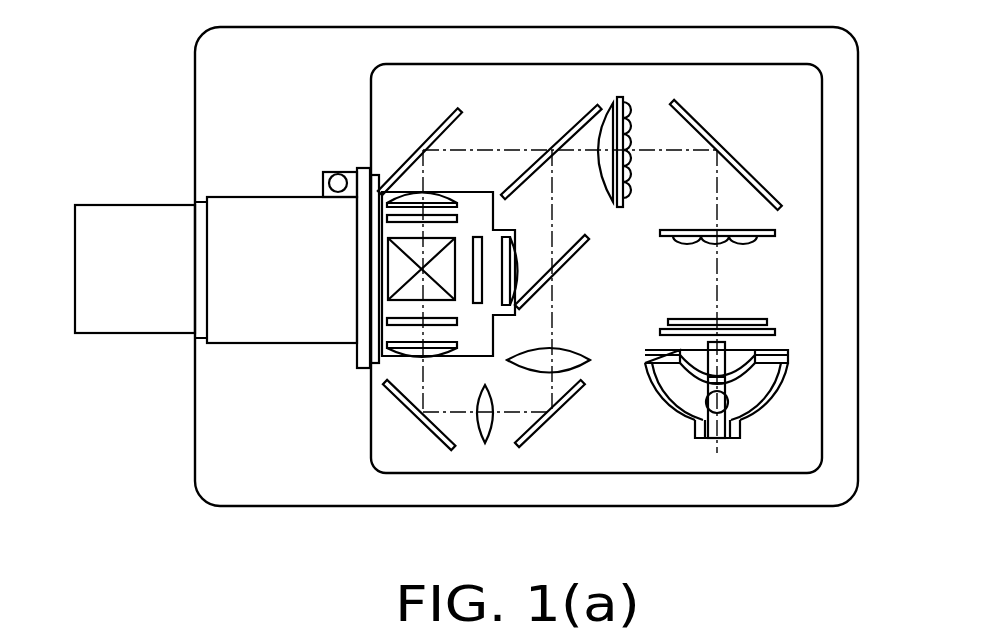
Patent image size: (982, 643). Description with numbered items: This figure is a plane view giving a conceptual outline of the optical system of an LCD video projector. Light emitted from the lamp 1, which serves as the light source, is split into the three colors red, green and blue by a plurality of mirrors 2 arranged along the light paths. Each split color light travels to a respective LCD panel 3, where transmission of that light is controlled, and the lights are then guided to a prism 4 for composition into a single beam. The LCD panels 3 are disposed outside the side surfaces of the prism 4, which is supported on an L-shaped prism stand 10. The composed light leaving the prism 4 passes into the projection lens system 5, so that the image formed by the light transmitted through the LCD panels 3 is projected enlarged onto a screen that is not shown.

The lamp 1 is at (752, 390).
The mirrors 2 is at (596, 110).
The LCD panels 3 is at (394, 216).
The prism 4 is at (400, 268).
The projection lens system 5 is at (230, 336).
The prism stand 10 is at (468, 343).